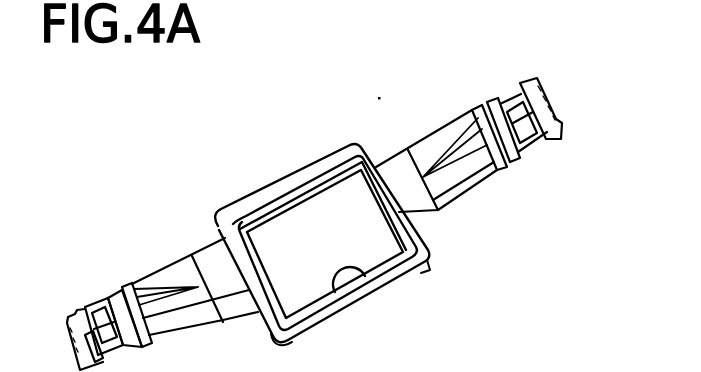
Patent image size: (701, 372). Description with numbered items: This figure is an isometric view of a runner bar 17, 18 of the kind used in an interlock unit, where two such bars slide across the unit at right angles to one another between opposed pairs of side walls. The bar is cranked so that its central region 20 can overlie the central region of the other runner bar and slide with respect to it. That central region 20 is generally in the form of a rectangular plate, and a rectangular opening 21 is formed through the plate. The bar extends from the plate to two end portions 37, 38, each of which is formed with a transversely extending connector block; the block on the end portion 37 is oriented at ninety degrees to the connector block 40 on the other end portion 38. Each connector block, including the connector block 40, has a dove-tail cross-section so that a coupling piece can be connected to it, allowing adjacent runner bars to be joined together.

The runner bar 17 is at (210, 198).
The runner bar 18 is at (353, 195).
The central region 20 is at (335, 154).
The rectangular opening 21 is at (366, 277).
The end portion 37 is at (110, 297).
The end portion 38 is at (472, 98).
The connector block 40 is at (558, 122).